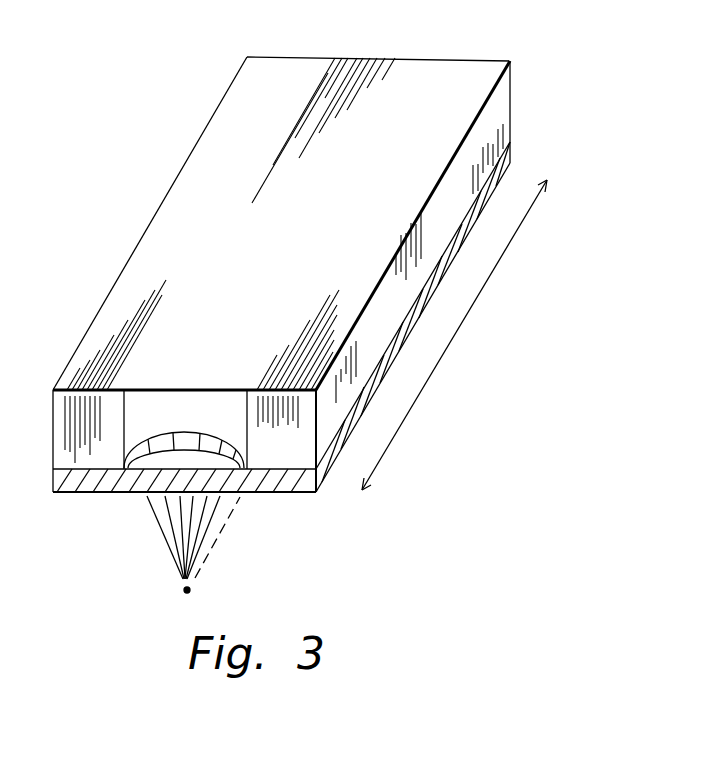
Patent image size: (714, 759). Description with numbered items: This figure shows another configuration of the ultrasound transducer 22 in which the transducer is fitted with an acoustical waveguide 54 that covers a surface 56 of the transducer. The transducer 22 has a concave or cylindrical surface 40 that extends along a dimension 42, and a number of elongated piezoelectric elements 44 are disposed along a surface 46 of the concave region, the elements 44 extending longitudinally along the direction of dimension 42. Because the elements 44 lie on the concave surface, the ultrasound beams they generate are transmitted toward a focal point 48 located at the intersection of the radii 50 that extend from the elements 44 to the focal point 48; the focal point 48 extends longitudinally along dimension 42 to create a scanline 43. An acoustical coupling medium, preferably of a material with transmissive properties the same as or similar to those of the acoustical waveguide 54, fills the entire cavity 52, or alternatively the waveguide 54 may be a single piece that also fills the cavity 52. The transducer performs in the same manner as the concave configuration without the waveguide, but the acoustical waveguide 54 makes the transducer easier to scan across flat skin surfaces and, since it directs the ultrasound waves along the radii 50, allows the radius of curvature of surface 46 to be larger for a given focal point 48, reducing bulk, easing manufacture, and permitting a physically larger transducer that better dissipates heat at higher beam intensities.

The transducer 22 is at (157, 211).
The concave or cylindrical surface 40 is at (196, 412).
The dimension 42 is at (445, 357).
The scanline 43 is at (217, 538).
The piezoelectric elements 44 is at (214, 443).
The surface 46 is at (180, 431).
The focal point 48 is at (191, 594).
The radii 50 is at (162, 530).
The cavity 52 is at (178, 458).
The acoustical waveguide 54 is at (504, 172).
The surface 56 is at (262, 481).